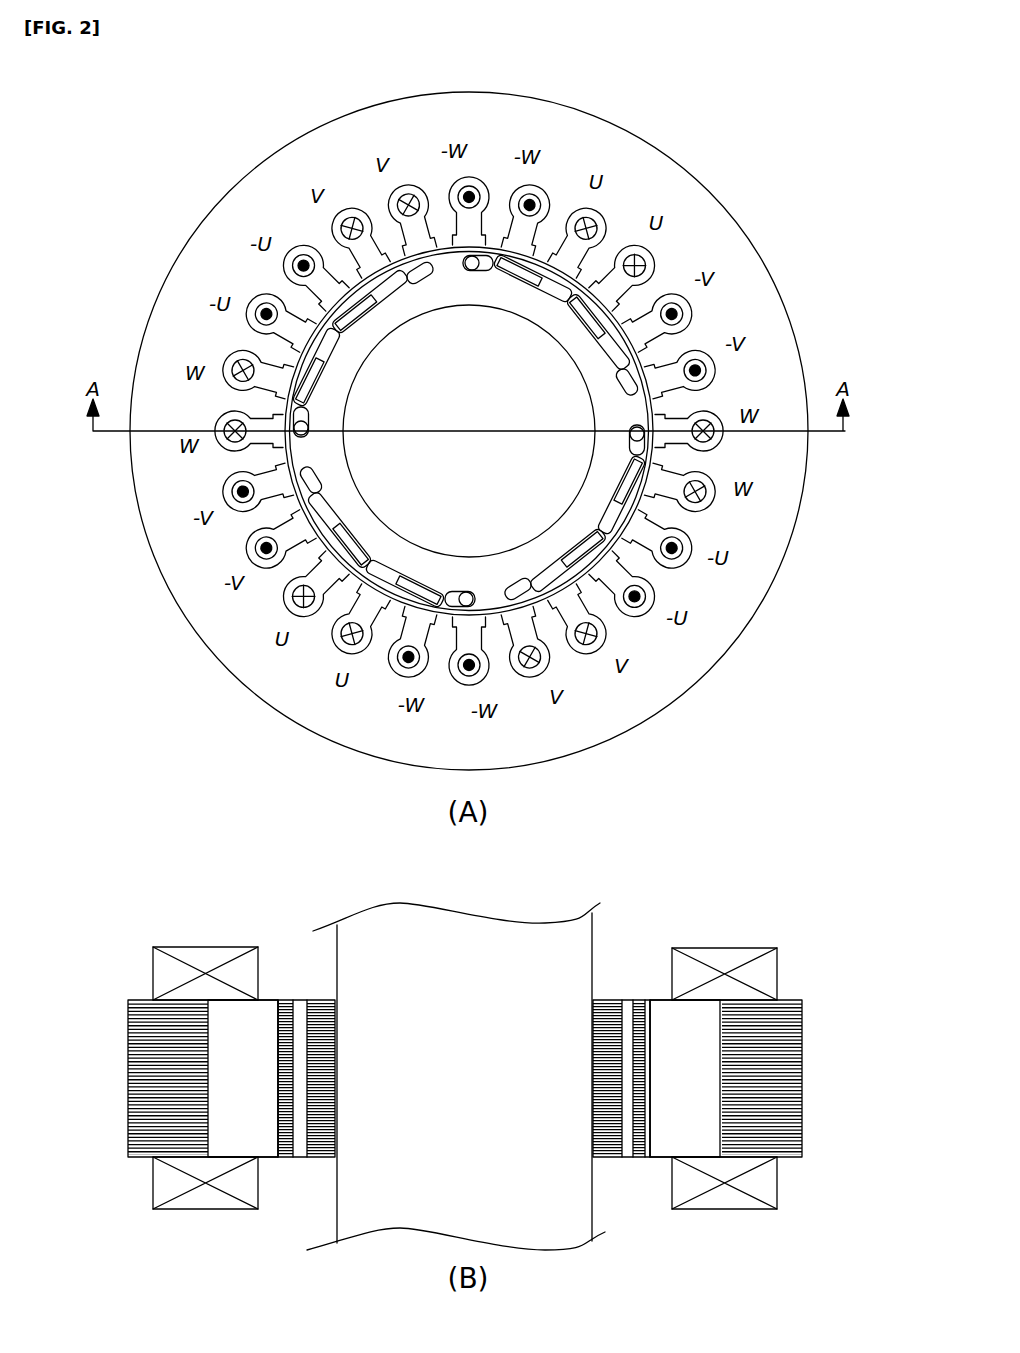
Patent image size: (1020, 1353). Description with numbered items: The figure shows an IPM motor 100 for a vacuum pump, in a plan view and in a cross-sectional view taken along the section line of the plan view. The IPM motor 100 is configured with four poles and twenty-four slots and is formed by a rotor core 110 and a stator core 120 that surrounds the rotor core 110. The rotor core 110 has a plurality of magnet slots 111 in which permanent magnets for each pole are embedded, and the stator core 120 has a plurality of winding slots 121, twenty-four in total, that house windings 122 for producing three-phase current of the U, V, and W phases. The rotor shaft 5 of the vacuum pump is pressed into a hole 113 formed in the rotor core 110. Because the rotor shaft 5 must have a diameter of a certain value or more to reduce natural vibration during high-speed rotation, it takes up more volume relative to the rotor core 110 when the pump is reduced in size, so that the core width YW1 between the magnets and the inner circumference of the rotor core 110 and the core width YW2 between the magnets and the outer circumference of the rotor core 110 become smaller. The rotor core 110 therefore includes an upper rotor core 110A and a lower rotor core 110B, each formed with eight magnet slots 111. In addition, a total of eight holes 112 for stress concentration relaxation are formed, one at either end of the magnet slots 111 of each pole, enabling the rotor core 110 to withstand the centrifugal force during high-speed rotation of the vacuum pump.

The rotor shaft 5 is at (459, 418).
The IPM motor 100 is at (781, 149).
The rotor core 110 is at (482, 300).
The upper rotor core 110A is at (605, 1000).
The lower rotor core 110B is at (603, 1160).
The magnet slot 111 is at (340, 520).
The hole for stress concentration relaxation 112 is at (312, 492).
The hole 113 is at (472, 300).
The stator core 120 is at (482, 127).
The winding slot 121 is at (600, 210).
The winding 122 is at (198, 948).
The core width YW1 is at (575, 371).
The core width YW2 is at (620, 345).